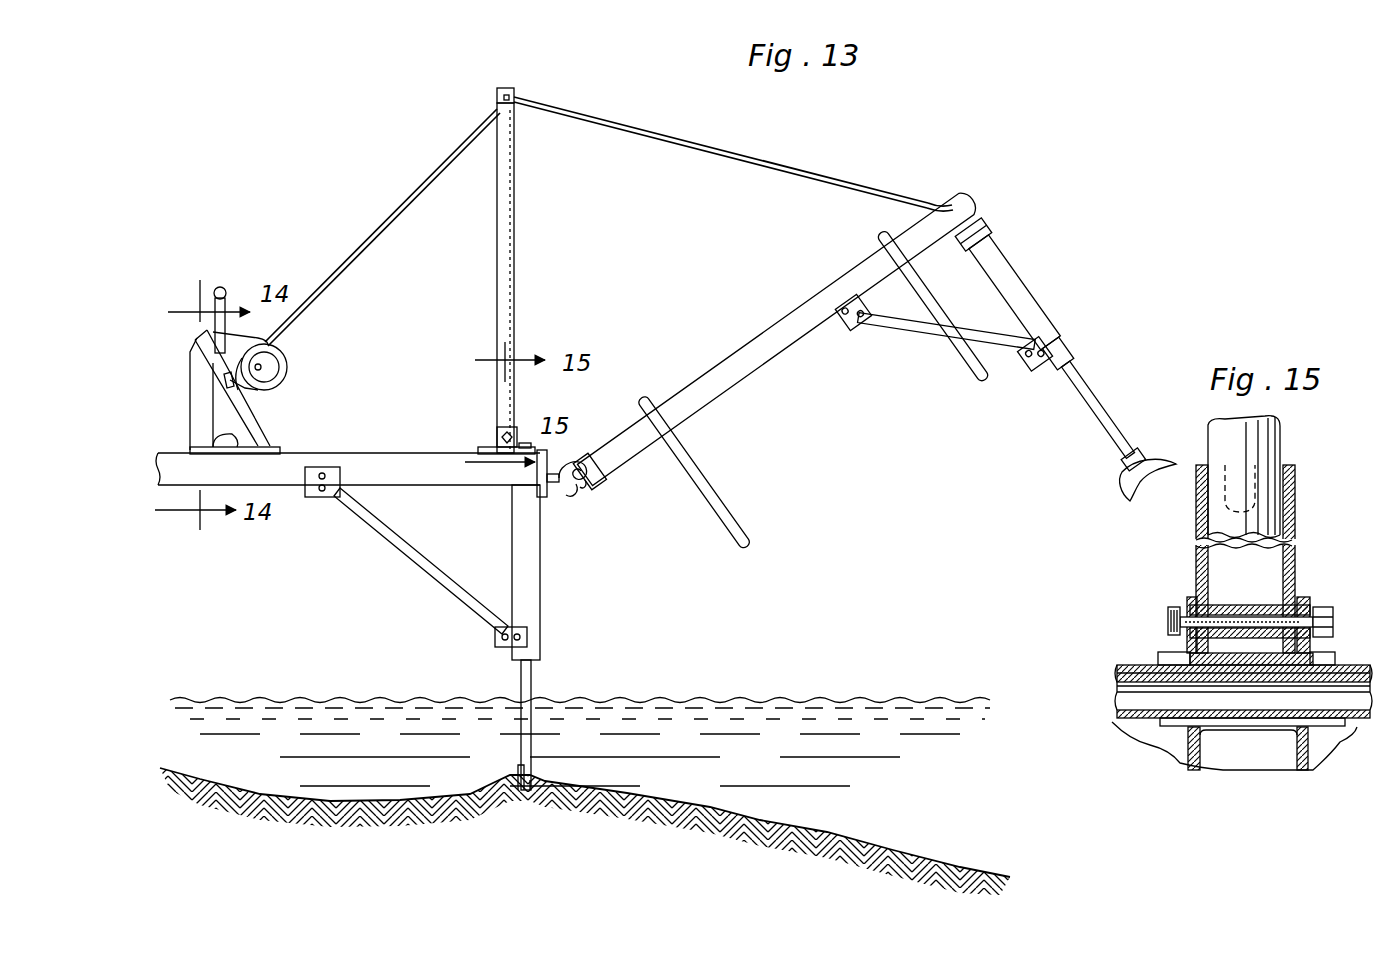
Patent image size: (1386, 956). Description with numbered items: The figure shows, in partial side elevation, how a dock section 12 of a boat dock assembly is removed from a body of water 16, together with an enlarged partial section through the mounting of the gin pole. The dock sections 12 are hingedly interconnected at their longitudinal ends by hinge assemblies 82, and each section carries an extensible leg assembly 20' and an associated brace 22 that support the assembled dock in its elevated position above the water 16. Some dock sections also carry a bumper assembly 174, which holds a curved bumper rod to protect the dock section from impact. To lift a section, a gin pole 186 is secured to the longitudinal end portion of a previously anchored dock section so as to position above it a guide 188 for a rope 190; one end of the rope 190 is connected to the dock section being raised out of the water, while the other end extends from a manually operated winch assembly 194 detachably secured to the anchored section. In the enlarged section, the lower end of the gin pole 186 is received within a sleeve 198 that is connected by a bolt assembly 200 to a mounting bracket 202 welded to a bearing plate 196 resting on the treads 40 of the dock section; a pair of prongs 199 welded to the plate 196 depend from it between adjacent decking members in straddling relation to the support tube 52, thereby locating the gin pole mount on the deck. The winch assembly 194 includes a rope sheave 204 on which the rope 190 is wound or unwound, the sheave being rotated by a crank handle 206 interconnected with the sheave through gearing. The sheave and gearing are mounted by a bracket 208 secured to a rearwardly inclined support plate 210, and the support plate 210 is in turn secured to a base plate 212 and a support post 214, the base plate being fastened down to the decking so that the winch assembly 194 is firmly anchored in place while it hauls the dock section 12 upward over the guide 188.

In FIG. 13, the dock section 12 is at (742, 338).
In FIG. 13, the body of water 16 is at (757, 722).
In FIG. 13, the extensible leg assembly 20' is at (559, 637).
In FIG. 13, the brace 22 is at (402, 553).
In FIG. 15, the treads 40 is at (1130, 678).
In FIG. 15, the support tube 52 is at (1195, 743).
In FIG. 13, the hinge assembly 82 is at (574, 480).
In FIG. 13, the bumper assembly 174 is at (682, 473).
In FIG. 13, the gin pole 186 is at (510, 231).
In FIG. 15, the gin pole 186 is at (1262, 456).
In FIG. 13, the guide 188 is at (510, 88).
In FIG. 13, the rope 190 is at (630, 128).
In FIG. 13, the winch assembly 194 is at (292, 369).
In FIG. 15, the bearing plate 196 is at (1147, 664).
In FIG. 13, the sleeve 198 is at (497, 413).
In FIG. 15, the sleeve 198 is at (1286, 563).
In FIG. 15, the prongs 199 is at (1163, 723).
In FIG. 15, the bolt assembly 200 is at (1330, 622).
In FIG. 15, the mounting bracket 202 is at (1327, 643).
In FIG. 13, the rope sheave 204 is at (286, 350).
In FIG. 13, the crank handle 206 is at (221, 287).
In FIG. 13, the bracket 208 is at (266, 386).
In FIG. 13, the support plate 210 is at (265, 425).
In FIG. 13, the base plate 212 is at (236, 446).
In FIG. 13, the support post 214 is at (203, 388).